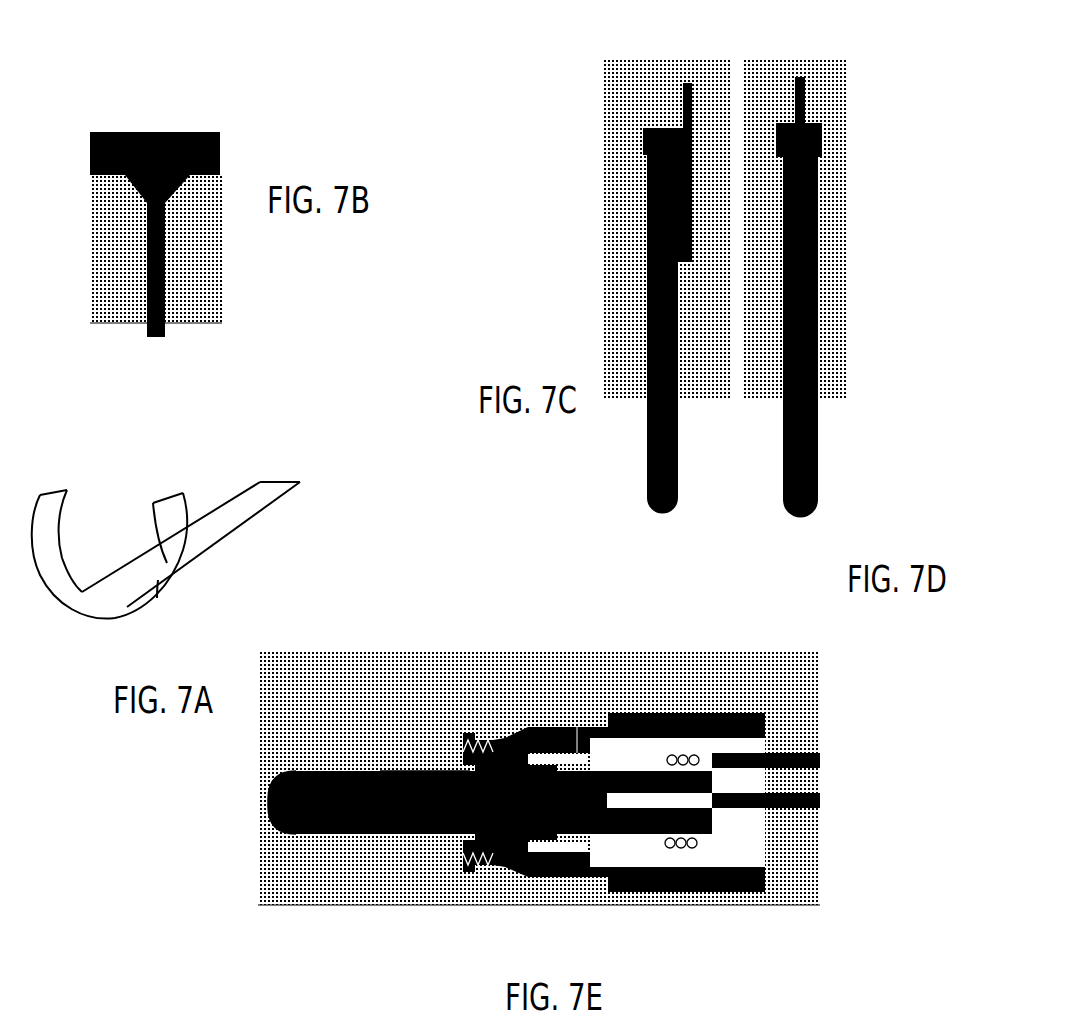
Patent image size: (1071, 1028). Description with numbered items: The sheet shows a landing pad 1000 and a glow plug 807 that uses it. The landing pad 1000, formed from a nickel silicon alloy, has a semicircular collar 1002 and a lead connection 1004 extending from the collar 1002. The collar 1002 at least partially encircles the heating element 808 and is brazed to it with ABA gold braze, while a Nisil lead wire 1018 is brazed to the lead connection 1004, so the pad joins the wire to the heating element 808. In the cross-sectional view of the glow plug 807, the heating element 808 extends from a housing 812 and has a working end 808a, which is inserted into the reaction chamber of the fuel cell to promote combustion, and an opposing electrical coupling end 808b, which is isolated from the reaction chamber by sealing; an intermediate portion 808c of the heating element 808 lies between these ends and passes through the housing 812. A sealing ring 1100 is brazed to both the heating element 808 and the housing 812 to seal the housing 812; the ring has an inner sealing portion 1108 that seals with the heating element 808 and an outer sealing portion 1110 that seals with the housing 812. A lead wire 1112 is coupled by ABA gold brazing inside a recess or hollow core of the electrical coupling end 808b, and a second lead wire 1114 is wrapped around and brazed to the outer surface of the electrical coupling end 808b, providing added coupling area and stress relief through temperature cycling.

In FIG. 7B, the landing pad 1000 is at (243, 254).
In FIG. 7A, the landing pad 1000 is at (276, 554).
In FIG. 7C, the landing pad 1000 is at (655, 127).
In FIG. 7D, the landing pad 1000 is at (772, 140).
In FIG. 7B, the collar 1002 is at (205, 157).
In FIG. 7B, the lead connection 1004 is at (147, 300).
In FIG. 7D, the lead wire 1018 is at (810, 125).
In FIG. 7E, the glow plug 807 is at (206, 830).
In FIG. 7C, the heating element 808 is at (650, 506).
In FIG. 7D, the heating element 808 is at (783, 506).
In FIG. 7E, the heating element 808 is at (321, 755).
In FIG. 7E, the working end 808a is at (268, 800).
In FIG. 7E, the electrical coupling end 808b is at (713, 836).
In FIG. 7E, the cable intermediate portion 808c is at (426, 766).
In FIG. 7E, the housing 812 is at (556, 733).
In FIG. 7E, the sealing ring 1100 is at (499, 758).
In FIG. 7E, the inner sealing portion 1108 is at (462, 850).
In FIG. 7E, the outer sealing portion 1110 is at (502, 878).
In FIG. 7E, the lead wire 1112 is at (577, 878).
In FIG. 7E, the second lead wire 1114 is at (680, 880).